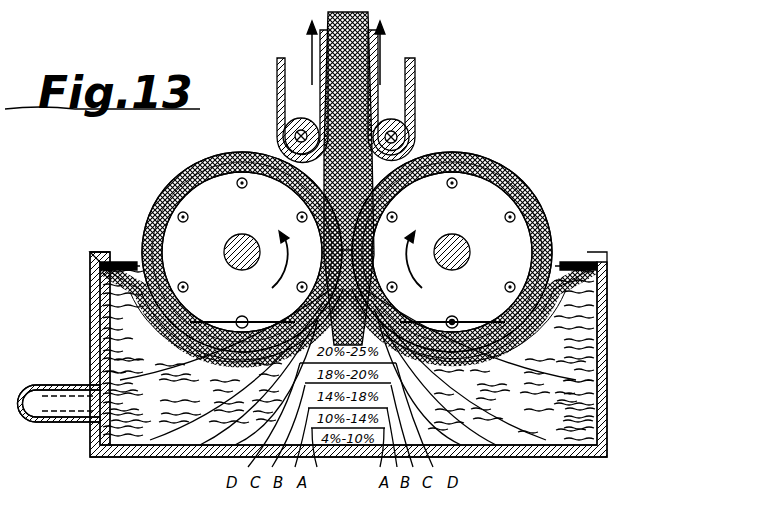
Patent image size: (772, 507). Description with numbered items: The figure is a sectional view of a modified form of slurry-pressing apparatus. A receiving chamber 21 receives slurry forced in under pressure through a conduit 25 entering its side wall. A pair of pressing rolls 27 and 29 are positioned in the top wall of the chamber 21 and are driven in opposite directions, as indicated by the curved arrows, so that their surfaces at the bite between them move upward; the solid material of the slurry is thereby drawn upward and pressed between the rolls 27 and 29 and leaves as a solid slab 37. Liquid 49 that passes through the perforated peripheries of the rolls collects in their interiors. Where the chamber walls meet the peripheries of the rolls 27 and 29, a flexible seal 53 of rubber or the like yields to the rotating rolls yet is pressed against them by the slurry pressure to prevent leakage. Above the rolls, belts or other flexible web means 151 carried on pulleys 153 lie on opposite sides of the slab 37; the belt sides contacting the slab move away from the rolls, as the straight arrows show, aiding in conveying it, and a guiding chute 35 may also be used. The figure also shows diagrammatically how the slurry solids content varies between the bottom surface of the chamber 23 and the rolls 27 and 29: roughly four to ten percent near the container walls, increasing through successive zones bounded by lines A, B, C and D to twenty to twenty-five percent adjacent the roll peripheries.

The receiving chamber 21 is at (603, 349).
The bottom surface of the chamber 23 is at (580, 398).
The conduit 25 is at (70, 388).
The pressing roll 27 is at (500, 198).
The pressing roll 29 is at (197, 192).
The guiding chute 35 is at (385, 168).
The slab 37 is at (367, 22).
The liquid 49 is at (470, 325).
The seal 53 is at (573, 253).
The belts 151 is at (279, 114).
The pulleys 153 is at (290, 136).